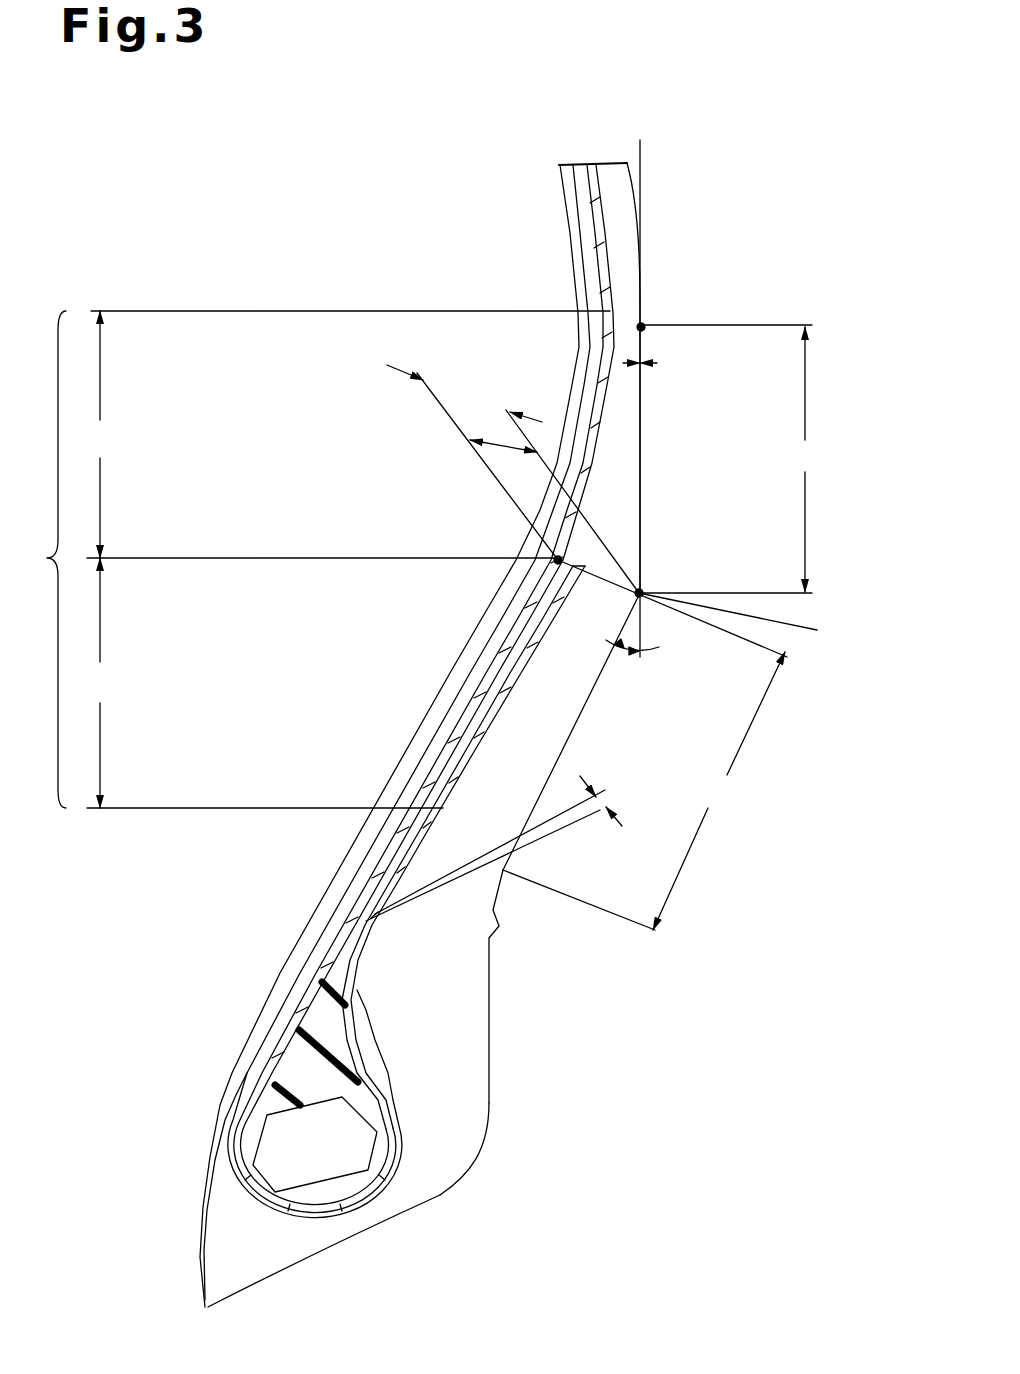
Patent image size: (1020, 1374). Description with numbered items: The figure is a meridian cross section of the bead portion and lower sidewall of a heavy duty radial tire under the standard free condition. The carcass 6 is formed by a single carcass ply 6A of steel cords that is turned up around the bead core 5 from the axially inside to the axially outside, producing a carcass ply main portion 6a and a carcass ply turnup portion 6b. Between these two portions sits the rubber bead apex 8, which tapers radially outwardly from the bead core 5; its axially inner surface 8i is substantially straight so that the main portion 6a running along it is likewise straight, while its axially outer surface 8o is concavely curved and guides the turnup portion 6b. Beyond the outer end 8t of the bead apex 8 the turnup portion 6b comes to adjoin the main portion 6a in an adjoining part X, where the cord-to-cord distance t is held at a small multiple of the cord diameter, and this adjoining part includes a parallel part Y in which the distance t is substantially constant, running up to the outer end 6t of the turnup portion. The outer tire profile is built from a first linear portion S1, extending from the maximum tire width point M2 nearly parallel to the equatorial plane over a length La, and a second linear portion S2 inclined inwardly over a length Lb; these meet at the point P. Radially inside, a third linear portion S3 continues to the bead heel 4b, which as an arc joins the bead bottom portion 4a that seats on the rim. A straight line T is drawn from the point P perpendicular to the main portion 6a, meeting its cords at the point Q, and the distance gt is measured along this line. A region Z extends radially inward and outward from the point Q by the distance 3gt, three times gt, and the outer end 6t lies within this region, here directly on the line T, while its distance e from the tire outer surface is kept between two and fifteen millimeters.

The normal line (vertical tangent line) N is at (645, 182).
The maximum tire width point M2 is at (645, 325).
The first linear portion S1 is at (646, 434).
The second linear portion S2 is at (579, 722).
The third linear portion S3 is at (490, 1057).
The length of the first linear portion La is at (731, 460).
The length of the second linear portion Lb is at (645, 745).
The point Q is at (561, 557).
The straight line T is at (642, 590).
The point P is at (740, 624).
The distance gt is at (513, 470).
The distance of the turnup outer end from the tire outer surface e is at (512, 442).
The distance between carcass cords t is at (494, 840).
The radial distance of three times gt 3gt is at (341, 559).
The region Z is at (44, 559).
The carcass 6 is at (476, 689).
The carcass ply 6A is at (476, 689).
The carcass ply main portion 6a is at (500, 655).
The carcass ply turnup portion 6b is at (492, 727).
The outer end of the turnup portion 6t is at (586, 565).
The parallel part Y is at (420, 778).
The adjoining part X is at (363, 952).
The bead apex 8 is at (330, 1017).
The outer end of the bead apex 8t is at (380, 930).
The axially inner surface of the bead apex 8i is at (288, 1040).
The axially outer surface of the bead apex 8o is at (349, 1043).
The bead core 5 is at (277, 1142).
The bead bottom portion 4a is at (353, 1232).
The bead heel 4b is at (476, 1157).